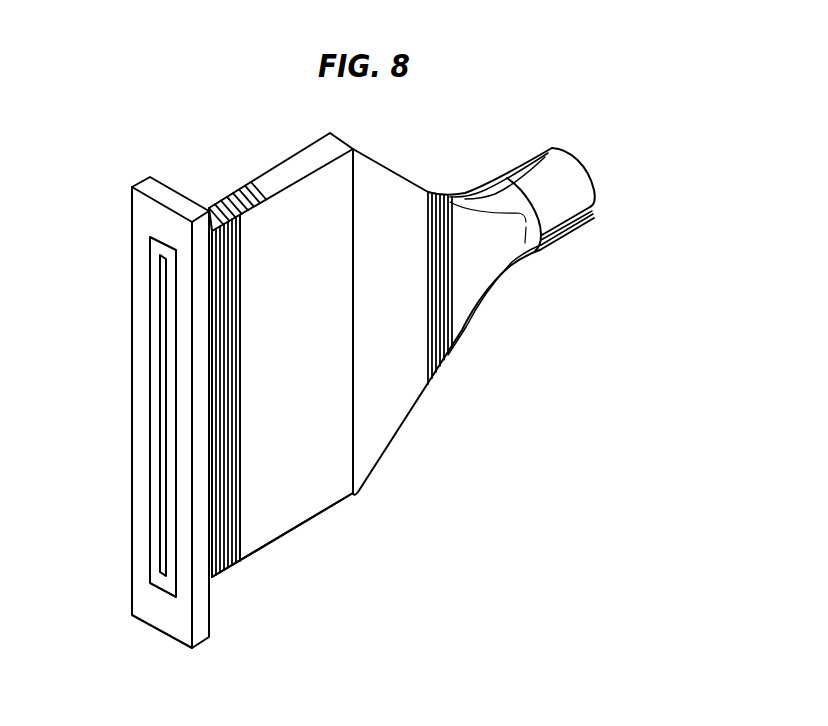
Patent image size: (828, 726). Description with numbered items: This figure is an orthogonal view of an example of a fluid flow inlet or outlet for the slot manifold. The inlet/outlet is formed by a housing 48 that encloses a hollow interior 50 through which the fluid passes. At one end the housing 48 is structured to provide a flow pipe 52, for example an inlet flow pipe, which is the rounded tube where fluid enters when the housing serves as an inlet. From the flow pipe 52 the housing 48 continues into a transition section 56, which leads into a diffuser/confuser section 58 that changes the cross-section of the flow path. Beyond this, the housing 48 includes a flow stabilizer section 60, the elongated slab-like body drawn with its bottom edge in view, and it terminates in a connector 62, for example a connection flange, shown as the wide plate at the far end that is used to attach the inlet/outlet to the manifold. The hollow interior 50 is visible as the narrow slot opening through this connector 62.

The housing 48 is at (285, 172).
The hollow interior 50 is at (165, 338).
The flow pipe 52 is at (573, 233).
The transition section 56 is at (493, 287).
The diffuser/confuser section 58 is at (412, 405).
The flow stabilizer section 60 is at (293, 531).
The connector 62 is at (170, 616).